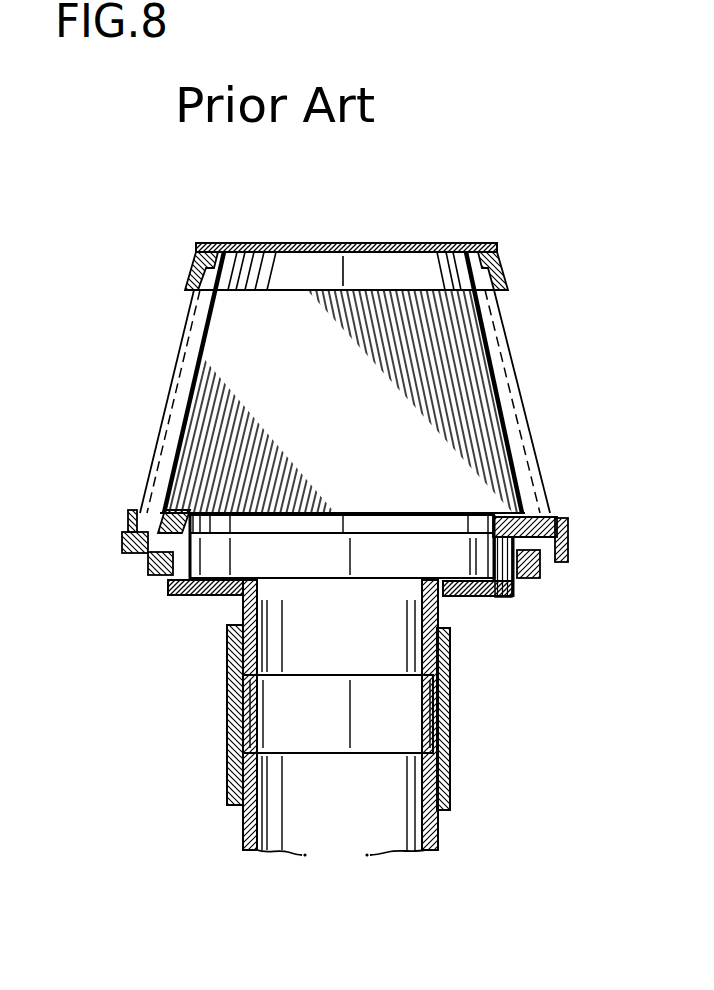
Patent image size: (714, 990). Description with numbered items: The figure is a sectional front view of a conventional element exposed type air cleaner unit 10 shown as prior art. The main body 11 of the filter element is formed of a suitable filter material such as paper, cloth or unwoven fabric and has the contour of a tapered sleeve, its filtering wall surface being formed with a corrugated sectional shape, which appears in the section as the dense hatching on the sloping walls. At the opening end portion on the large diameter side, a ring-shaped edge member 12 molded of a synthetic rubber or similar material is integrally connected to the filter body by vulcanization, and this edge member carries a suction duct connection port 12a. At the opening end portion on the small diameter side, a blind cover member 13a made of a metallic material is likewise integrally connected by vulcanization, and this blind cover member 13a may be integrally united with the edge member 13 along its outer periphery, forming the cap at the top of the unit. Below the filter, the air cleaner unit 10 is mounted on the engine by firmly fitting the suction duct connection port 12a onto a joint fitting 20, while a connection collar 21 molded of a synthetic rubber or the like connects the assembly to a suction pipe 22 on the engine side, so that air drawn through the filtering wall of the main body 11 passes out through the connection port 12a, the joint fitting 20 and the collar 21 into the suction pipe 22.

The air cleaner unit 10 is at (175, 286).
The main body of filter element 11 is at (516, 381).
The ring-shaped edge member 12 is at (570, 535).
The suction duct connection port 12a is at (492, 598).
The edge member 13 is at (464, 251).
The blind cover member 13a is at (372, 244).
The joint fitting 20 is at (442, 603).
The connection collar 21 is at (451, 703).
The suction pipe 22 is at (437, 833).